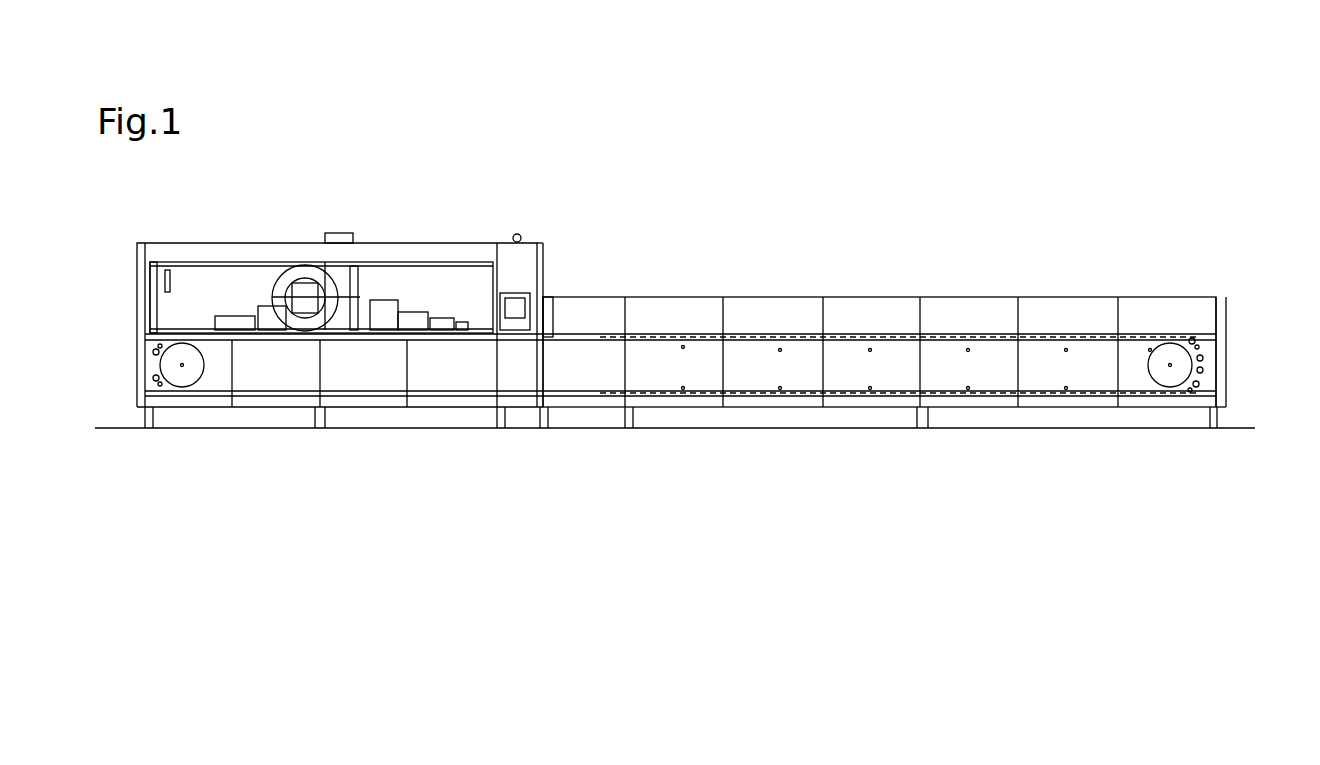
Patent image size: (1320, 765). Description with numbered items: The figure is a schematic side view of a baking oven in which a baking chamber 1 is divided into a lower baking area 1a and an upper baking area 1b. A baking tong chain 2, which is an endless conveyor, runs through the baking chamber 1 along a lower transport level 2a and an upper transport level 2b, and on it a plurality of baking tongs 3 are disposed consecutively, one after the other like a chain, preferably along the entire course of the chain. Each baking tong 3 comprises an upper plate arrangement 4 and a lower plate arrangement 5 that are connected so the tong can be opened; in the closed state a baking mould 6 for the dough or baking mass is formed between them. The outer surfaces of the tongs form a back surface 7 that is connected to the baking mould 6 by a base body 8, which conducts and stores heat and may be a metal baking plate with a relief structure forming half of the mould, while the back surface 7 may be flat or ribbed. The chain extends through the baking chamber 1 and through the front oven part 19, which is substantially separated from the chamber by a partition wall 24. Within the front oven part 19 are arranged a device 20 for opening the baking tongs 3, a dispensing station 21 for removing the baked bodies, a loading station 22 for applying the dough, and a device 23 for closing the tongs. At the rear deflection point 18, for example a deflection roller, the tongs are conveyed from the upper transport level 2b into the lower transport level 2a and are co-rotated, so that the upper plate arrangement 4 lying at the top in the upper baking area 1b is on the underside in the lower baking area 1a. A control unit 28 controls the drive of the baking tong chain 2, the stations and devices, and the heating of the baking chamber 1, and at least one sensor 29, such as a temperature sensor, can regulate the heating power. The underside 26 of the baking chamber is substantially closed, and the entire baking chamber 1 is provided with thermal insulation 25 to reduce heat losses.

The baking chamber 1 is at (884, 300).
The lower baking area 1a is at (900, 437).
The upper baking area 1b is at (900, 260).
The baking tong chain 2 is at (680, 414).
The lower transport level 2a is at (900, 448).
The upper transport level 2b is at (900, 269).
The baking tong 3 is at (1262, 392).
The upper plate arrangement 4 is at (265, 258).
The lower plate arrangement 5 is at (321, 425).
The baking mould 6 is at (230, 245).
The back surface 7 is at (888, 349).
The base body 8 is at (183, 410).
The rear deflection point 18 is at (1160, 410).
The front oven part 19 is at (319, 390).
The device for opening the baking tongs 20 is at (340, 294).
The dispensing station 21 is at (316, 245).
The loading station 22 is at (353, 253).
The device for closing the baking tongs 23 is at (405, 263).
The partition wall 24 is at (488, 420).
The thermal insulation 25 is at (1288, 333).
The underside of the baking chamber 26 is at (921, 454).
The control unit 28 is at (522, 255).
The sensor 29 is at (574, 270).